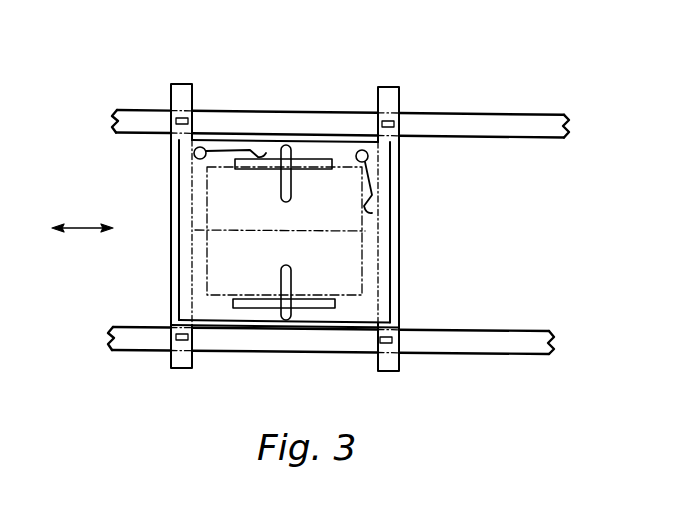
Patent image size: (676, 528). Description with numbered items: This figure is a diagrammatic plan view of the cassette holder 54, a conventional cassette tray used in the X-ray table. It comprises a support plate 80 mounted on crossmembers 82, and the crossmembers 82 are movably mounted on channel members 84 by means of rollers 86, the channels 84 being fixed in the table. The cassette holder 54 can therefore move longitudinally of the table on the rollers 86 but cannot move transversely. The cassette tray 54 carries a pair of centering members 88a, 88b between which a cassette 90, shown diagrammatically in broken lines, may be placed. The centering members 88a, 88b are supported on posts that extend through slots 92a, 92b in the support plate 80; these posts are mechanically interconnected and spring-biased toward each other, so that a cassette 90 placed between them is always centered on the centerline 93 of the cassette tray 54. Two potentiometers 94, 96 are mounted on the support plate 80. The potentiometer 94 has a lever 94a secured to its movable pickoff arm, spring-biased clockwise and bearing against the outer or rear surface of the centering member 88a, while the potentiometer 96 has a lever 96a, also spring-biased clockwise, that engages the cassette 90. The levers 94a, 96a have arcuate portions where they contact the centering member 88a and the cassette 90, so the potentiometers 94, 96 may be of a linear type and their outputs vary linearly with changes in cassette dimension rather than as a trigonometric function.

The cassette holder 54 is at (407, 240).
The support plate 80 is at (392, 193).
The crossmembers 82 is at (171, 290).
The channel members 84 is at (462, 113).
The rollers 86 is at (190, 122).
The centering member 88a is at (318, 158).
The centering member 88b is at (240, 308).
The cassette 90 is at (362, 258).
The slot 92a is at (286, 146).
The slot 92b is at (289, 321).
The centerline 93 is at (207, 229).
The potentiometer 94 is at (194, 153).
The lever 94a is at (240, 149).
The potentiometer 96 is at (368, 157).
The lever 96a is at (366, 208).